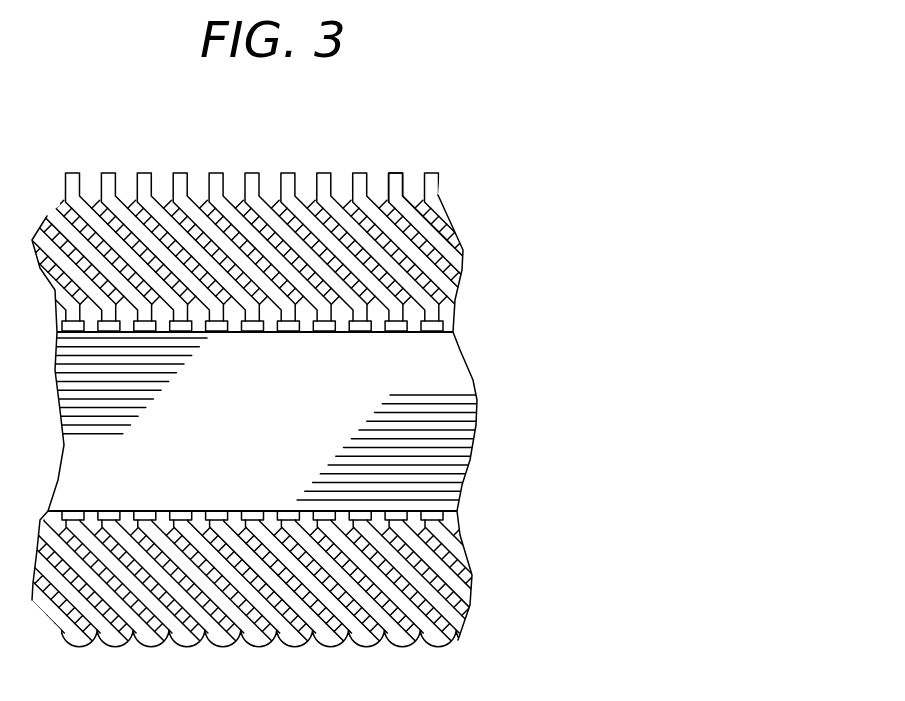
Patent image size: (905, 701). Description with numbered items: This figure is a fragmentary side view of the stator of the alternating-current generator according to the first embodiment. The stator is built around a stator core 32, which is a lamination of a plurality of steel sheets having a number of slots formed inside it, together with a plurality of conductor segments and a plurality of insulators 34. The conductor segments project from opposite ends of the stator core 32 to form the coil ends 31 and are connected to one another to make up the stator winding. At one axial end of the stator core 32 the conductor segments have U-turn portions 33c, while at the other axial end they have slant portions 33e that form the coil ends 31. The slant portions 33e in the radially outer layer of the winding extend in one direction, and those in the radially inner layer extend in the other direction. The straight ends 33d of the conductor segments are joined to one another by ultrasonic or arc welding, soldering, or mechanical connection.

The coil end 31 is at (457, 177).
The stator core 32 is at (453, 367).
The U-turn portion 33c is at (442, 642).
The straight end 33d is at (393, 180).
The slant portion 33e is at (447, 230).
The insulator 34 is at (455, 305).